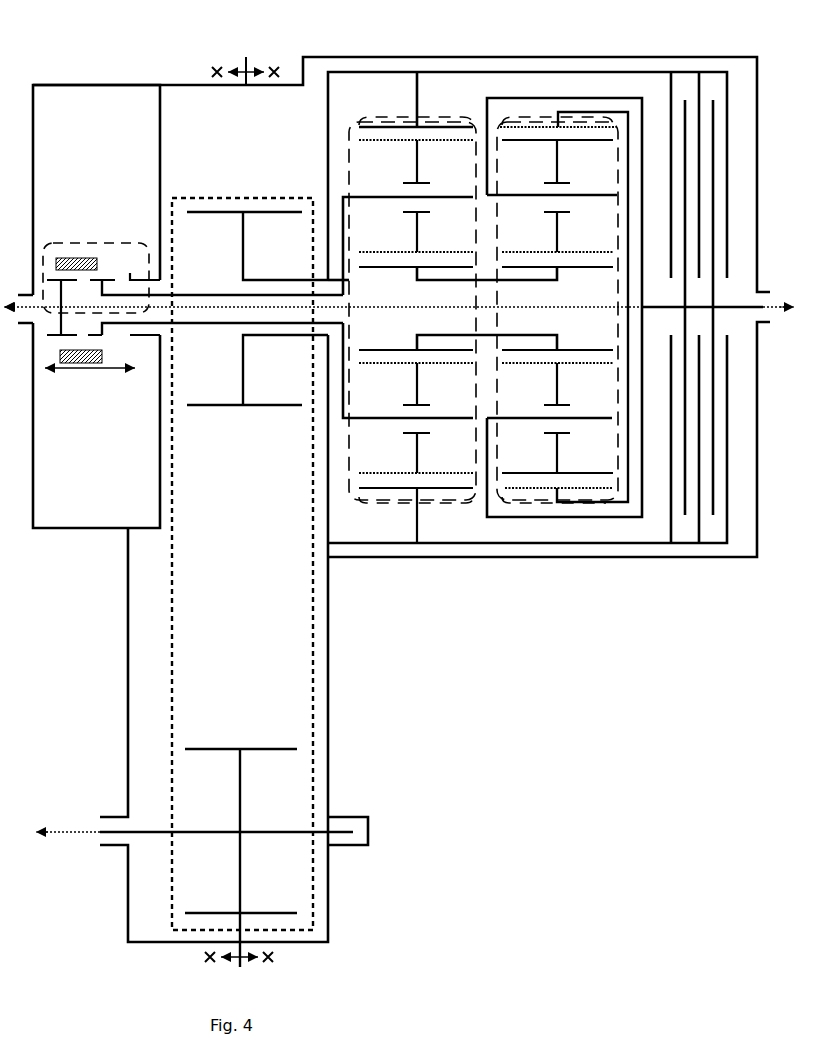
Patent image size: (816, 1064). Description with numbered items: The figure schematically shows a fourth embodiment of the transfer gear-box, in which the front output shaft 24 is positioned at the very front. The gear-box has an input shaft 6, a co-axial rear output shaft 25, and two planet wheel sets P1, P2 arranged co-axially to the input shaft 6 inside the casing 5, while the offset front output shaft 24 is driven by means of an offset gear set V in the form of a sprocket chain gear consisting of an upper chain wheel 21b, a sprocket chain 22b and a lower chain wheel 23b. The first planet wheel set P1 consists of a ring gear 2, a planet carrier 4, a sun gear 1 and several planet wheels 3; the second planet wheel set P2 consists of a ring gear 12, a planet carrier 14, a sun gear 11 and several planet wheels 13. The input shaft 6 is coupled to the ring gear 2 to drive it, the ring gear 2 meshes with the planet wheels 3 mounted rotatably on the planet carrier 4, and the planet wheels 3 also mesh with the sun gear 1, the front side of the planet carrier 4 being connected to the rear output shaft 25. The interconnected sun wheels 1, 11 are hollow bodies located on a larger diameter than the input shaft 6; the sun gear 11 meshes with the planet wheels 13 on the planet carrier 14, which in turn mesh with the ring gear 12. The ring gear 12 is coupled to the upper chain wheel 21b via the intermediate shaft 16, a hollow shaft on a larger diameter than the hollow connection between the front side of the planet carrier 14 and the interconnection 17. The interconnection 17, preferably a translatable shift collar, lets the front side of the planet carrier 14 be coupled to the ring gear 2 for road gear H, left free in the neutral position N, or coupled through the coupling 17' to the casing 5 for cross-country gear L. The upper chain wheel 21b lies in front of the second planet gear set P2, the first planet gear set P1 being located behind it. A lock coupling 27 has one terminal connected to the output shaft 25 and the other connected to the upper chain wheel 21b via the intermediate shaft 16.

The sun gear 1 is at (539, 308).
The ring gear 2 is at (541, 118).
The planet wheels 3 is at (544, 398).
The planet carrier 4 is at (552, 300).
The casing 5 is at (96, 295).
The input shaft 6 is at (173, 307).
The sun gear 11 is at (431, 308).
The ring gear 12 is at (401, 125).
The planet wheels 13 is at (423, 398).
The planet carrier 14 is at (408, 299).
The intermediate shaft 16 is at (401, 499).
The interconnection 17 is at (96, 296).
The coupling to the casing 17' is at (139, 270).
The upper chain wheel 21b is at (257, 308).
The sprocket chain 22b is at (242, 564).
The lower chain wheel 23b is at (241, 858).
The front output shaft 24 is at (194, 821).
The rear output shaft 25 is at (718, 294).
The lock coupling 27 is at (712, 307).
The first planet wheel set P1 is at (543, 503).
The second planet wheel set P2 is at (451, 503).
The offset gear set V is at (345, 718).